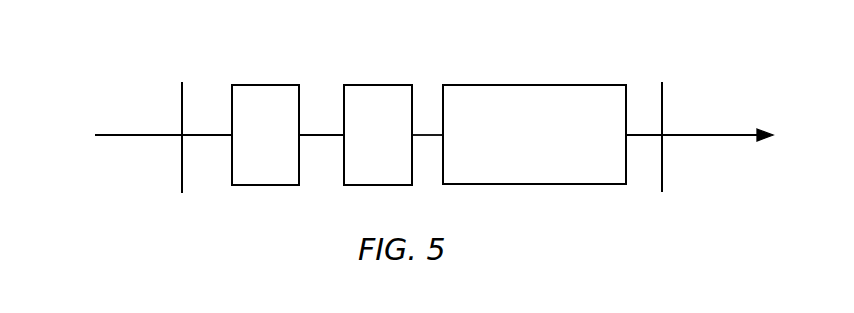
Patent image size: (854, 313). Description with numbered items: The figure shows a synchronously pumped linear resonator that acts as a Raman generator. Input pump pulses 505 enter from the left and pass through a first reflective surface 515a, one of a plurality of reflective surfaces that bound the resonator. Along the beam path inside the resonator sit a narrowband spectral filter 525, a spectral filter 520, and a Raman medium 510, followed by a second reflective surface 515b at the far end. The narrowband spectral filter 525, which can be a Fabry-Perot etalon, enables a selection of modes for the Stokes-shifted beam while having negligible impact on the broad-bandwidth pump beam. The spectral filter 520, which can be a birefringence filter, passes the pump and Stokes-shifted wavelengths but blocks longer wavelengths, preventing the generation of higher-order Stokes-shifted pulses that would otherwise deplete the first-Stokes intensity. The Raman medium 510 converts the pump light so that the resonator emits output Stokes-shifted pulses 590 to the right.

The input pump pulses 505 is at (118, 135).
The reflective surface 515a is at (181, 100).
The narrowband spectral filter 525 is at (265, 135).
The spectral filter 520 is at (378, 135).
The Raman medium 510 is at (534, 134).
The reflective surface 515b is at (663, 118).
The output Stokes-shifted pulse 590 is at (708, 136).